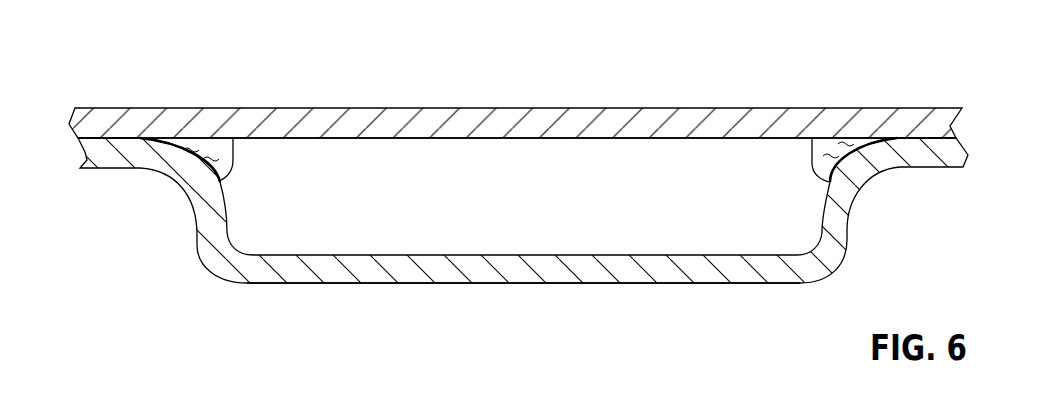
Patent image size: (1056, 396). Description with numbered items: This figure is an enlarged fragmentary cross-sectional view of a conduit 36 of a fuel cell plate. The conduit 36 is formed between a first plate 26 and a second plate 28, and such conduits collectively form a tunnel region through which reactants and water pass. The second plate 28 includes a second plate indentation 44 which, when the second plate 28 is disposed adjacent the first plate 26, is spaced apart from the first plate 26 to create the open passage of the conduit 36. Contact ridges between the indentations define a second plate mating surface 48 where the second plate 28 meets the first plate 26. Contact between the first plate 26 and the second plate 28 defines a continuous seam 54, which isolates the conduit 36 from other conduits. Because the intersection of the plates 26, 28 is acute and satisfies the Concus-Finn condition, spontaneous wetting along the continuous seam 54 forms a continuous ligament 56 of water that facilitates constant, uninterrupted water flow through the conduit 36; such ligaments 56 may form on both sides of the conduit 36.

The first plate 26 is at (978, 108).
The second plate 28 is at (948, 283).
The conduit 36 is at (535, 211).
The second plate indentation 44 is at (382, 283).
The second plate mating surface 48 is at (120, 137).
The continuous seam 54 is at (150, 137).
The continuous ligament 56 is at (233, 163).